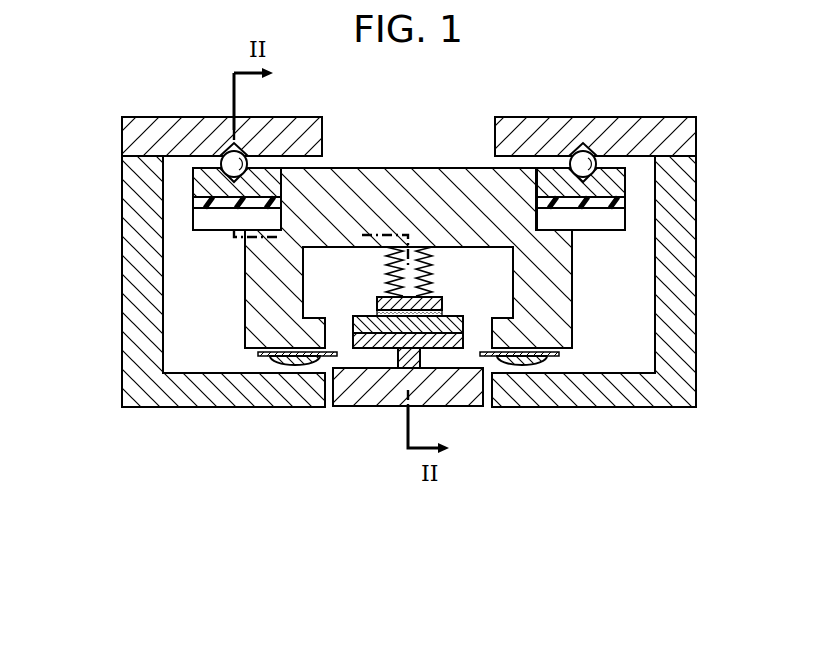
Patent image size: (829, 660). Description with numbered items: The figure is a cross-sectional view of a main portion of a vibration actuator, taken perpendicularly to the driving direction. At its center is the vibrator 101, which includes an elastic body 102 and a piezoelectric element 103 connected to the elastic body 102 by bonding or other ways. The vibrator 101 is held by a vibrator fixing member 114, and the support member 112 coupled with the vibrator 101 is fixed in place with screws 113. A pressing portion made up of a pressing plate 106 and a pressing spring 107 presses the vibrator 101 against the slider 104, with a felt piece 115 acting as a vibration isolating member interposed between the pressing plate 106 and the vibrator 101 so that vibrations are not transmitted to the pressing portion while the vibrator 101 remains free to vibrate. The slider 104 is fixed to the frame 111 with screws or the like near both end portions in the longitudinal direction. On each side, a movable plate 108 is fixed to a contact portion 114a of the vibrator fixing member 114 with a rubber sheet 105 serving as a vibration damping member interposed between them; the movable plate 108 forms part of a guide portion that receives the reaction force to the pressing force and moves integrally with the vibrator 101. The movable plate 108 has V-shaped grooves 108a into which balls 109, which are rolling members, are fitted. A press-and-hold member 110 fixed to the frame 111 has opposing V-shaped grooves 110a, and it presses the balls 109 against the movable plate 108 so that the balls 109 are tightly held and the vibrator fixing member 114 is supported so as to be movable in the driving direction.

The vibrator 101 is at (459, 451).
The elastic body 102 is at (450, 340).
The piezoelectric element 103 is at (462, 325).
The slider 104 is at (352, 398).
The rubber sheet 105 is at (195, 203).
The pressing plate 106 is at (442, 304).
The pressing spring 107 is at (432, 262).
The movable plate 108 is at (205, 188).
The V-shaped grooves 108a is at (250, 165).
The balls 109 is at (221, 150).
The press-and-hold member 110 is at (150, 128).
The V-shaped grooves 110a is at (246, 145).
The frame 111 is at (178, 400).
The support member 112 is at (265, 357).
The screws 113 is at (290, 360).
The vibrator fixing member 114 is at (553, 342).
The contact portion 114a is at (210, 222).
The felt piece 115 is at (442, 313).